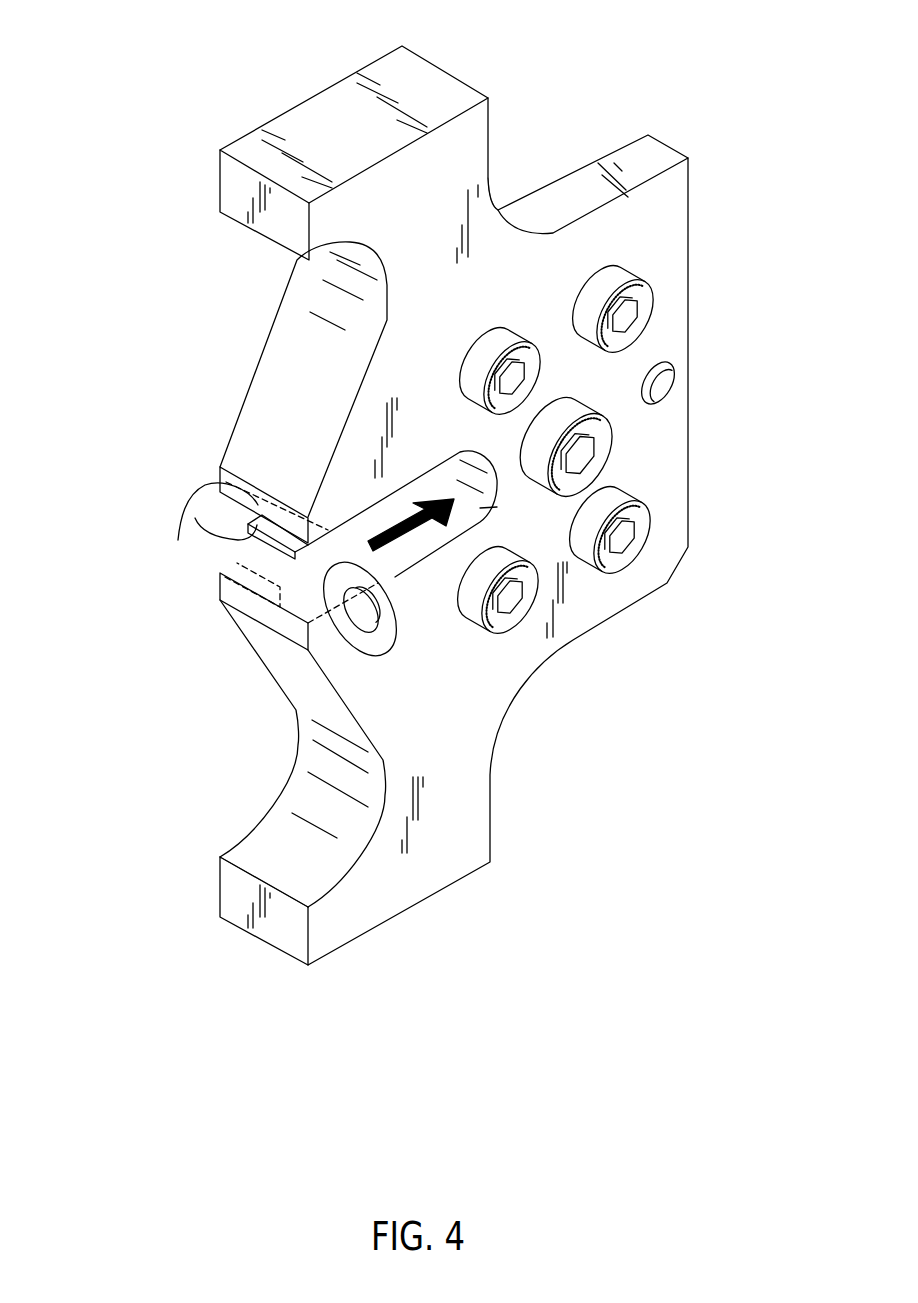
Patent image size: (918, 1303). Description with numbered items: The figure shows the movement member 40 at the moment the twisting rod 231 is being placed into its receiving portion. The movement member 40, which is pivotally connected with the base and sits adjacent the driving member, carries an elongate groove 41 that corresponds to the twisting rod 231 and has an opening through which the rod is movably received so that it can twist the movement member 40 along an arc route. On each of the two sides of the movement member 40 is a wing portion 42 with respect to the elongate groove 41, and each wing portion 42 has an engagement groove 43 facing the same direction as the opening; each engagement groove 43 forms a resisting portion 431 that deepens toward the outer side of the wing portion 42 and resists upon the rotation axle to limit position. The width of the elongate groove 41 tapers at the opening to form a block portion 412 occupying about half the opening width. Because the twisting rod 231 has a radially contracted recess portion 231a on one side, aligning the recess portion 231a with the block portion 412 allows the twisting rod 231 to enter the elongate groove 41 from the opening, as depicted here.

The movement member 40 is at (677, 325).
The elongate groove 41 is at (480, 506).
The block portion 412 is at (178, 540).
The wing portion 42 is at (317, 110).
The engagement groove 43 is at (270, 292).
The resisting portion 431 is at (297, 278).
The twisting rod 231 is at (208, 498).
The recess portion 231a is at (183, 500).